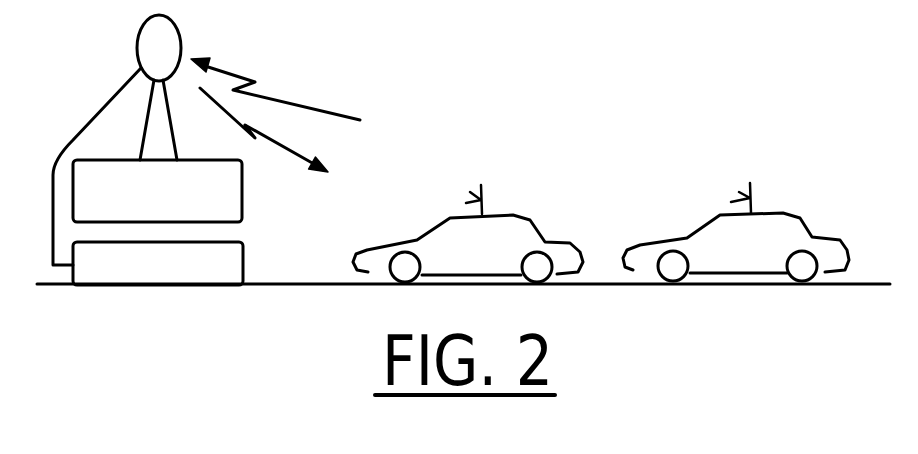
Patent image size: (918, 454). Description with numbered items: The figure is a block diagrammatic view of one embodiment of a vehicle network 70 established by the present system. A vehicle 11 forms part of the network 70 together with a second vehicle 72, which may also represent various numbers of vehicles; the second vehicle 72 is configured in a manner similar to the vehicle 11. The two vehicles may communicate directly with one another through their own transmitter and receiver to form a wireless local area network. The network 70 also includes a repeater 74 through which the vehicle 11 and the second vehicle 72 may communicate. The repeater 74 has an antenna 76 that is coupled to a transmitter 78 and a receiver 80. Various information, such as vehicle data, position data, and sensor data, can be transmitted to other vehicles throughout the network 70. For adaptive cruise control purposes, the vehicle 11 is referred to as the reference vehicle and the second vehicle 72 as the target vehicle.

The vehicle 11 is at (783, 213).
The network 70 is at (460, 73).
The second vehicle 72 is at (520, 215).
The repeater 74 is at (136, 65).
The antenna 76 is at (137, 42).
The transmitter 78 is at (243, 195).
The receiver 80 is at (243, 260).